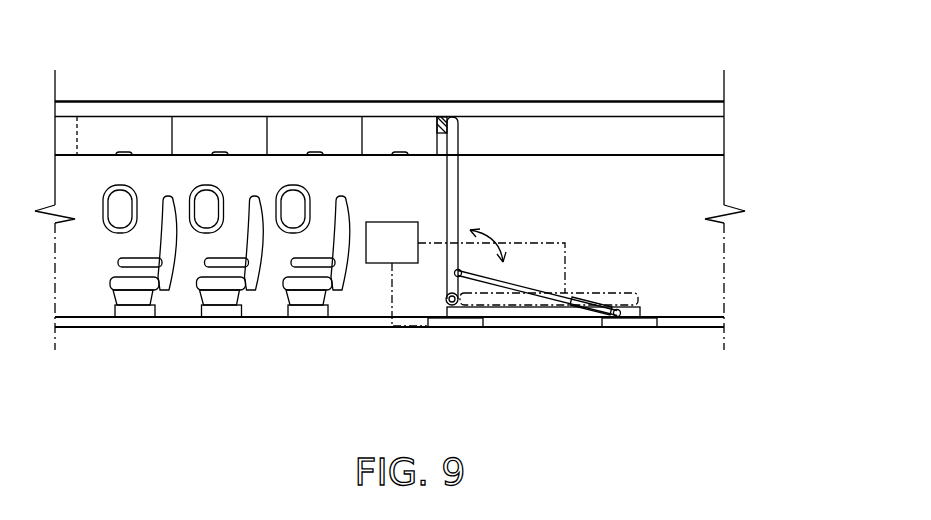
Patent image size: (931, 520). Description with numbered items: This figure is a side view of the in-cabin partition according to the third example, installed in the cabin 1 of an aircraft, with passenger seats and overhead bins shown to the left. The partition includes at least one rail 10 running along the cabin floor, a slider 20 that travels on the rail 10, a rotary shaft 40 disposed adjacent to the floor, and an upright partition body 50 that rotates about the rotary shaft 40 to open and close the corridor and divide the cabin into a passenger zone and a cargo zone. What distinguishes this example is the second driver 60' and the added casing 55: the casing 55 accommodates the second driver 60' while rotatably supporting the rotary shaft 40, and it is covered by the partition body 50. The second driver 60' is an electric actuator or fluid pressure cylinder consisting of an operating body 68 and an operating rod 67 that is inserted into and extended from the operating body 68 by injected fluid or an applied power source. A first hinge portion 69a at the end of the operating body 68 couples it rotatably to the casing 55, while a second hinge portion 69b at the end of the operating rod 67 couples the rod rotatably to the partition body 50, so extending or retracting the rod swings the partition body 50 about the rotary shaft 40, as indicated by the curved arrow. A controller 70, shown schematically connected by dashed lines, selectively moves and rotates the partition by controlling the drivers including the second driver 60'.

The cabin 1 is at (377, 175).
The rail 10 is at (708, 323).
The slider 20 is at (443, 327).
The rotary shaft 40 is at (447, 303).
The partition body 50 is at (449, 118).
The casing 55 is at (535, 290).
The second driver 60' is at (543, 369).
The operating rod 67 is at (585, 310).
The operating body 68 is at (595, 322).
The first hinge portion 69a is at (617, 309).
The second hinge portion 69b is at (459, 277).
The controller 70 is at (380, 257).